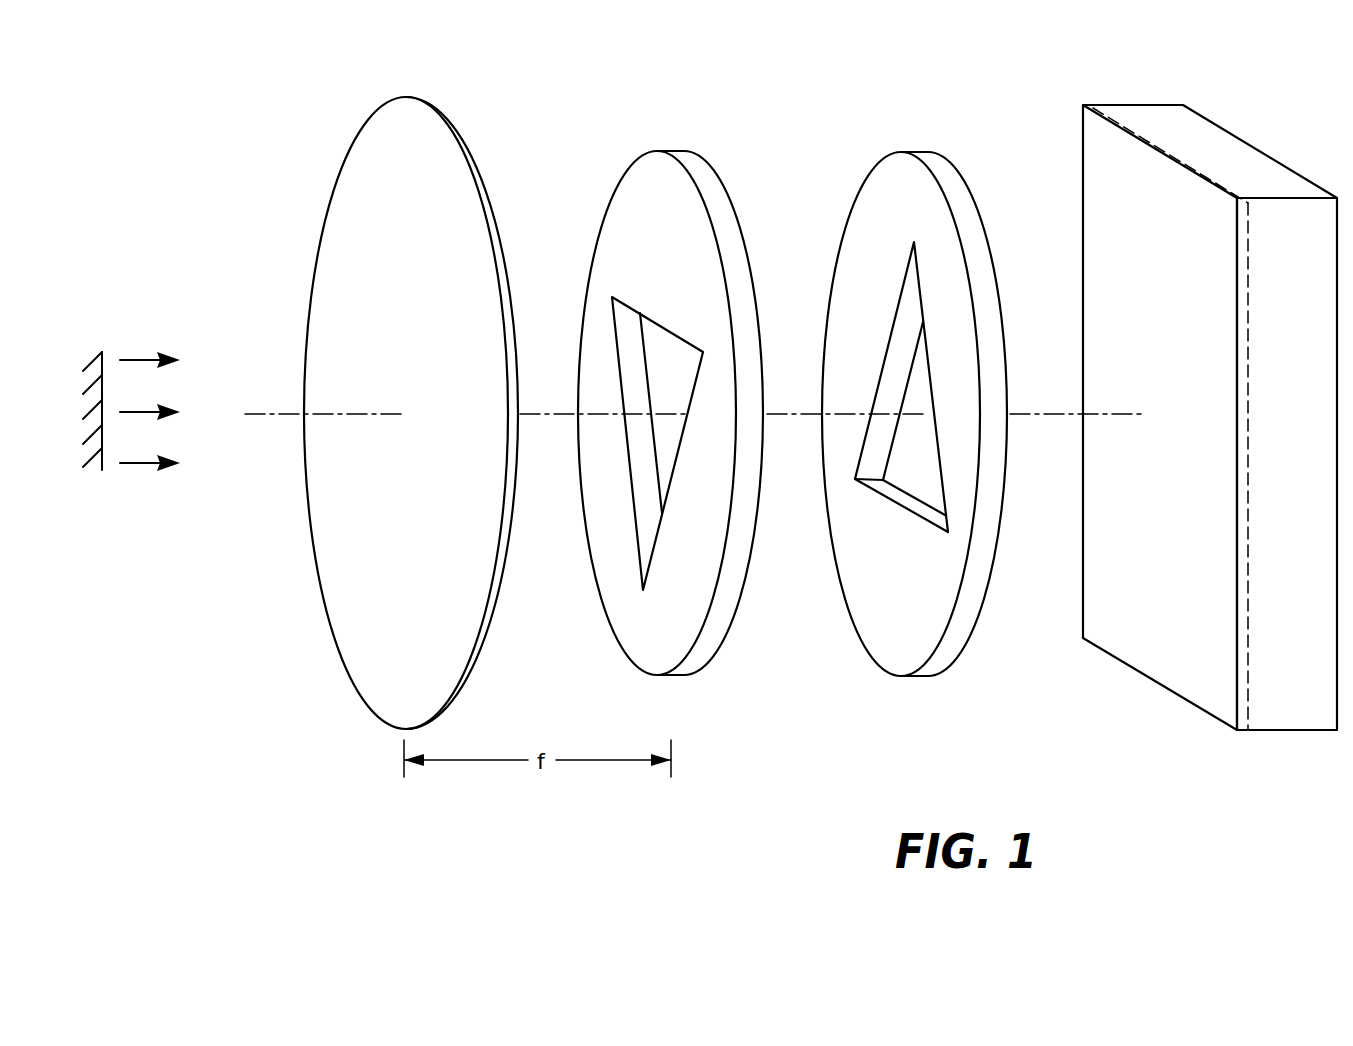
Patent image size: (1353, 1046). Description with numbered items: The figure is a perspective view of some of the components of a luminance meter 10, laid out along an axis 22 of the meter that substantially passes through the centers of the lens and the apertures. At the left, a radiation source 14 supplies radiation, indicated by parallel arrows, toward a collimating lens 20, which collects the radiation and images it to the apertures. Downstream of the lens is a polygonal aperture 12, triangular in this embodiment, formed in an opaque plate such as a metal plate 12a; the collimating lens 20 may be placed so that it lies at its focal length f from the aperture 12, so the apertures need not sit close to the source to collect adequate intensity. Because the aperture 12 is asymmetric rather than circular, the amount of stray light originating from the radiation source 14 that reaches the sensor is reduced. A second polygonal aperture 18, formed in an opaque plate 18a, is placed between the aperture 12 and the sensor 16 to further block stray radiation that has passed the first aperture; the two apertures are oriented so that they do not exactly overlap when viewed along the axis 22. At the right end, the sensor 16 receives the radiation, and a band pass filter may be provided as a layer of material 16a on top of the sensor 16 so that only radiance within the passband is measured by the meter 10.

The luminance meter 10 is at (255, 185).
The polygonal aperture 12 is at (663, 365).
The metal plate 12a is at (675, 150).
The radiation source 14 is at (104, 362).
The sensor 16 is at (1235, 135).
The band pass filter layer 16a is at (1236, 730).
The second polygonal aperture 18 is at (910, 475).
The opaque plate 18a is at (920, 152).
The collimating lens 20 is at (333, 630).
The axis 22 is at (345, 415).